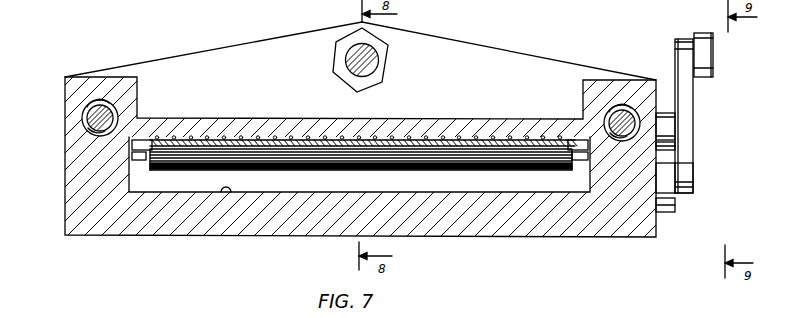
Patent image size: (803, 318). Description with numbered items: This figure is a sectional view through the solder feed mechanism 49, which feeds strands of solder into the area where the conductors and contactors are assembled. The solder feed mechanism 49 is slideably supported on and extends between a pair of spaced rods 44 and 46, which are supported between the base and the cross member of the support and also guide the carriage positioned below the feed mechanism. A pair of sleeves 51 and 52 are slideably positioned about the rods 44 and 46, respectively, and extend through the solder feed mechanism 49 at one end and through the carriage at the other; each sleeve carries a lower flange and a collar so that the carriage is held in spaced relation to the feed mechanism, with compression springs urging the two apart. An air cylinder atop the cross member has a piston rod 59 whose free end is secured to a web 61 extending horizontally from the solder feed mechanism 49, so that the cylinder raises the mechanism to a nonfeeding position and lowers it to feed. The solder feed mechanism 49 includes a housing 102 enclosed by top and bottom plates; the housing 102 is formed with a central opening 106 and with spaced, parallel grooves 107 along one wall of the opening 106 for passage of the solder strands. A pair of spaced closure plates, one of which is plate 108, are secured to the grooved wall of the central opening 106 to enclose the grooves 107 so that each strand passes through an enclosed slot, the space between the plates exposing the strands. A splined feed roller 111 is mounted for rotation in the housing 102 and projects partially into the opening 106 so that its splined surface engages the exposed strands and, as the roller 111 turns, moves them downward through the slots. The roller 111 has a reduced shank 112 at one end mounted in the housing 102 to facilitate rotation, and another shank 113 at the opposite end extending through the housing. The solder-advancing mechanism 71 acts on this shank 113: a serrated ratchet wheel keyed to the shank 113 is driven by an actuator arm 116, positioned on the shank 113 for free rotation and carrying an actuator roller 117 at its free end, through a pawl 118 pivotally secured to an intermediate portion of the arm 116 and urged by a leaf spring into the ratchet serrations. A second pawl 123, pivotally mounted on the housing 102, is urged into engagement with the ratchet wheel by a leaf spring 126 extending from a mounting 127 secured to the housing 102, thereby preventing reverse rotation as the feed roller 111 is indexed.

The solder feed mechanism 49 is at (107, 263).
The housing 102 is at (72, 208).
The central opening 106 is at (226, 190).
The web 61 is at (280, 40).
The piston rod 59 is at (388, 53).
The rod 46 is at (82, 127).
The sleeve 52 is at (95, 103).
The rod 44 is at (617, 109).
The sleeve 51 is at (612, 110).
The grooves 107 is at (262, 134).
The closure plate 108 is at (432, 140).
The feed roller 111 is at (468, 172).
The reduced shank 112 is at (135, 162).
The shank 113 is at (575, 168).
The actuator arm 116 is at (675, 62).
The actuator roller 117 is at (710, 58).
The pawl 118 is at (668, 128).
The mounting 127 is at (672, 152).
The leaf spring 126 is at (670, 182).
The second pawl 123 is at (675, 208).
The solder-advancing mechanism 71 is at (728, 102).